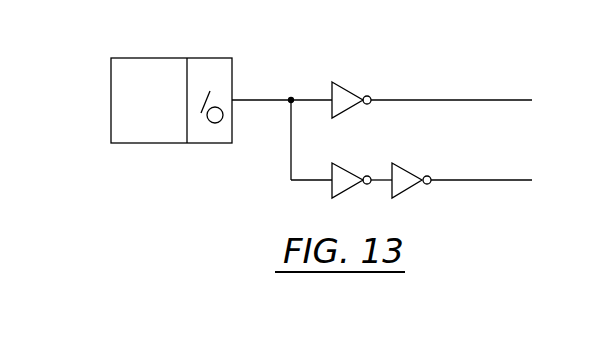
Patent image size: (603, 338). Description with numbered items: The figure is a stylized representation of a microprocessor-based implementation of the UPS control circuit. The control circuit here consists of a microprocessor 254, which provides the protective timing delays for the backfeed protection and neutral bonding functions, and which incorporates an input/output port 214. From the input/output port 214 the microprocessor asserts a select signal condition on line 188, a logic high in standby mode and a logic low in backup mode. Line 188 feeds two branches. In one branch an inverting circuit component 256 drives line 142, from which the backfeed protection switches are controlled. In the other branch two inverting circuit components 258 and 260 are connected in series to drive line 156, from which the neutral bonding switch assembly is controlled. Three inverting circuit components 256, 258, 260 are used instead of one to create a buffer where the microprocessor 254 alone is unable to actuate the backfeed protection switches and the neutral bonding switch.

The microprocessor 254 is at (158, 58).
The input/output port 214 is at (208, 58).
The line 188 is at (258, 100).
The inverting circuit component 256 is at (343, 80).
The line 142 is at (493, 100).
The inverting circuit component 258 is at (340, 163).
The inverting circuit component 260 is at (408, 165).
The line 156 is at (502, 180).